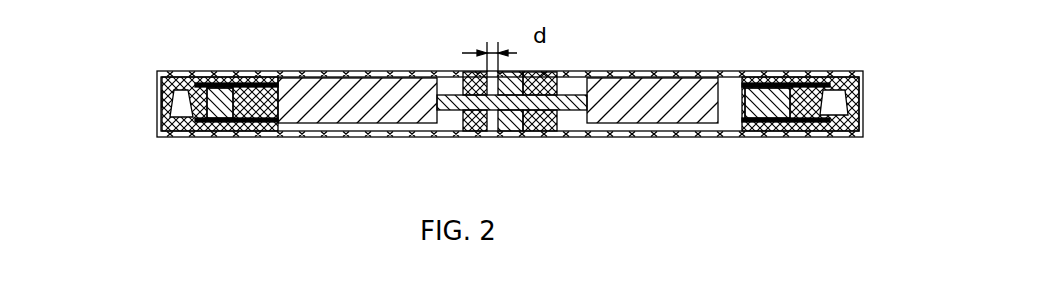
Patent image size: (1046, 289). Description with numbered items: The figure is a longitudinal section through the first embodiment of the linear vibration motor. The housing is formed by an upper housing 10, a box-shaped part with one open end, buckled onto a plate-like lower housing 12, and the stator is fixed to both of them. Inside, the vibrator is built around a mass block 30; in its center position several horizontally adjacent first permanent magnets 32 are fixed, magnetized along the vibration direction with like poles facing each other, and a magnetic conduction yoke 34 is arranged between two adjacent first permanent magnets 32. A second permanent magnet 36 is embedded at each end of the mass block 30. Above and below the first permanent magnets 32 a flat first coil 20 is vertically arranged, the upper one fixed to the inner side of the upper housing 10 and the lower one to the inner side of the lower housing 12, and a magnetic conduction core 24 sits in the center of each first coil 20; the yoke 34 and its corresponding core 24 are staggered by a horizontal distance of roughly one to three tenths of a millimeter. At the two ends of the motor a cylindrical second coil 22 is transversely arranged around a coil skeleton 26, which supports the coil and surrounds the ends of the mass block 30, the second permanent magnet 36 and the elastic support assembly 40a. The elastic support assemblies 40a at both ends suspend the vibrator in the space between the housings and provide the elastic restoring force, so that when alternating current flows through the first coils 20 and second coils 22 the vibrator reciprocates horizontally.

The upper housing 10 is at (676, 72).
The lower housing 12 is at (690, 134).
The first coil 20 is at (512, 97).
The second coil 22 is at (782, 74).
The magnetic conduction core 24 is at (520, 133).
The coil skeleton 26 is at (824, 74).
The mass block 30 is at (366, 78).
The first permanent magnet 32 is at (563, 133).
The magnetic conduction yoke 34 is at (477, 134).
The second permanent magnet 36 is at (251, 74).
The elastic support assembly 40a is at (145, 89).